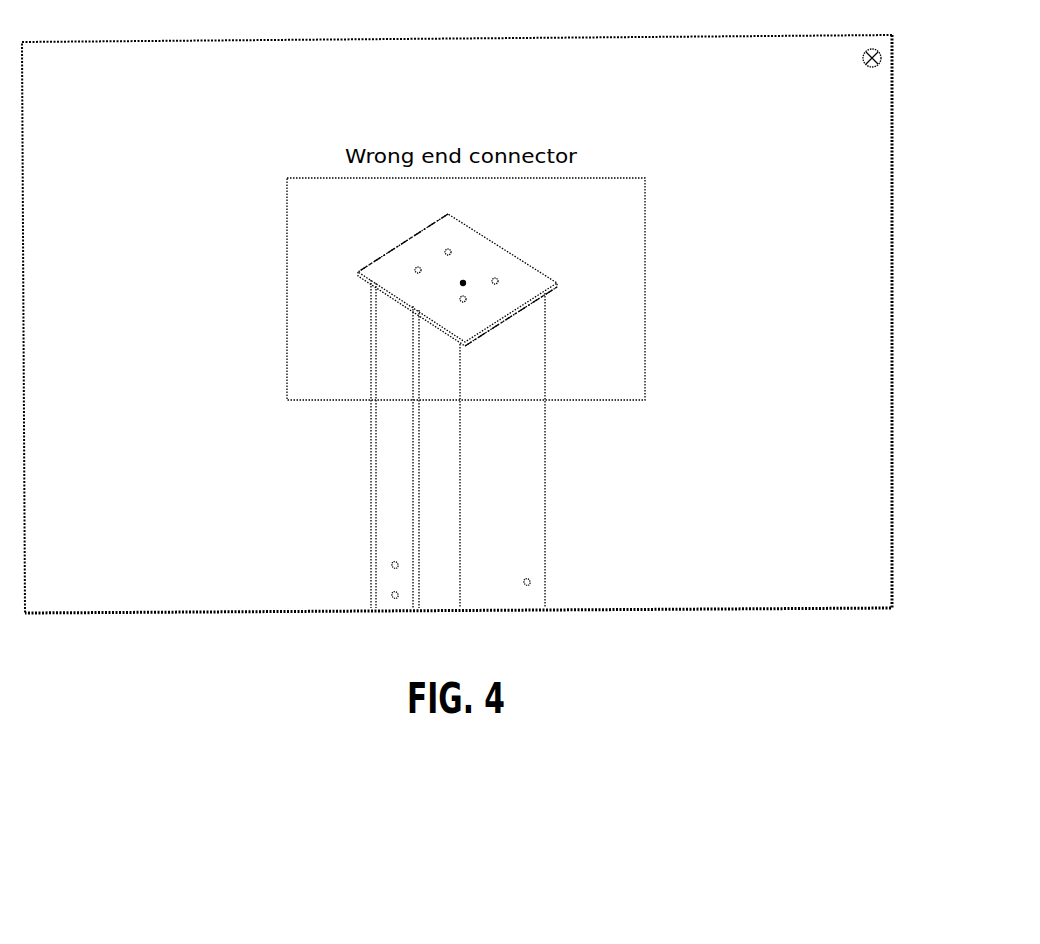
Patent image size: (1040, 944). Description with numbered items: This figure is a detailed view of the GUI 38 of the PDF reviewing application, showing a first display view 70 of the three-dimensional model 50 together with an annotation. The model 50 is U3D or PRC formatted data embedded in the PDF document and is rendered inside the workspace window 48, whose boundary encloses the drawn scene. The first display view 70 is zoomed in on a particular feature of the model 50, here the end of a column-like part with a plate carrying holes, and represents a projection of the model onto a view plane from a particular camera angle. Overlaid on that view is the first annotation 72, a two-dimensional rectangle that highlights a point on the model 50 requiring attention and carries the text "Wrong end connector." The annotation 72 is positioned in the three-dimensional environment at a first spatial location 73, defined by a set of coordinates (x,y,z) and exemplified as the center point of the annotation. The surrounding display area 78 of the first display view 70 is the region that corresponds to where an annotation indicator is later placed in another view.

The GUI 38 is at (506, 324).
The workspace window 48 is at (892, 347).
The three-dimensional model 50 is at (545, 512).
The first display view 70 is at (692, 203).
The first annotation 72 is at (645, 307).
The first spatial location 73 is at (463, 278).
The display area 78 is at (852, 540).